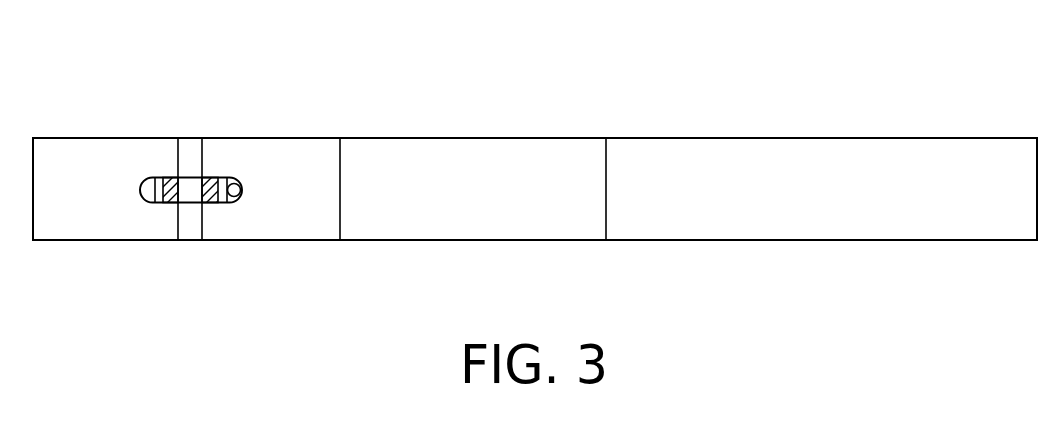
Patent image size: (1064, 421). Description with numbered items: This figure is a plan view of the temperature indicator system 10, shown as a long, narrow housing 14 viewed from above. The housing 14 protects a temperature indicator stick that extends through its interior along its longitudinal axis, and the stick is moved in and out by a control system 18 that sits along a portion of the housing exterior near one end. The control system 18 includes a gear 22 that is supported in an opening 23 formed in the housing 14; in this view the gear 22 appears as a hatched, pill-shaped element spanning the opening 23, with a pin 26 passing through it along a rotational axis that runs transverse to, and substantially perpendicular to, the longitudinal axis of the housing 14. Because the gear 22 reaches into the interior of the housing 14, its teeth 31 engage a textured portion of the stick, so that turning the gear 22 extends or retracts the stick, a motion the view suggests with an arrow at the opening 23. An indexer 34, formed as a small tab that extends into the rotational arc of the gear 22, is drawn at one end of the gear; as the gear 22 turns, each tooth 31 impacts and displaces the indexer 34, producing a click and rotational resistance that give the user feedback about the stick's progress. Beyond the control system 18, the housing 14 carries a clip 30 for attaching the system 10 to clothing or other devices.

The temperature indicator system 10 is at (812, 58).
The housing 14 is at (807, 240).
The control system 18 is at (208, 98).
The gear 22 is at (172, 177).
The opening 23 is at (148, 214).
The pin 26 is at (190, 232).
The clip 30 is at (485, 202).
The teeth 31 is at (222, 202).
The indexer 34 is at (233, 183).